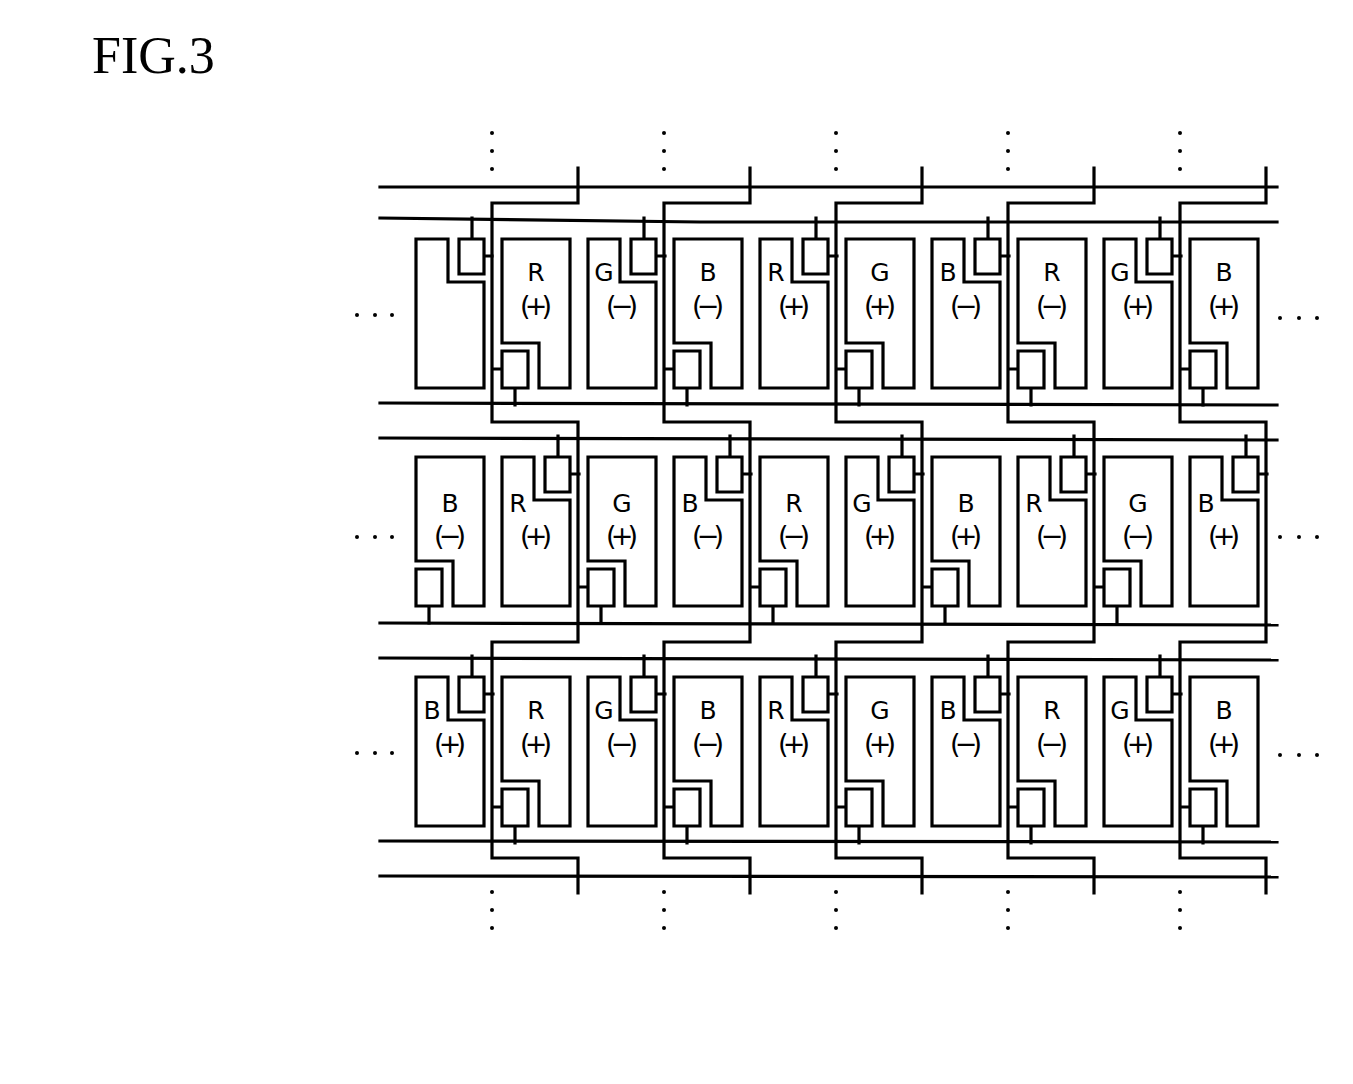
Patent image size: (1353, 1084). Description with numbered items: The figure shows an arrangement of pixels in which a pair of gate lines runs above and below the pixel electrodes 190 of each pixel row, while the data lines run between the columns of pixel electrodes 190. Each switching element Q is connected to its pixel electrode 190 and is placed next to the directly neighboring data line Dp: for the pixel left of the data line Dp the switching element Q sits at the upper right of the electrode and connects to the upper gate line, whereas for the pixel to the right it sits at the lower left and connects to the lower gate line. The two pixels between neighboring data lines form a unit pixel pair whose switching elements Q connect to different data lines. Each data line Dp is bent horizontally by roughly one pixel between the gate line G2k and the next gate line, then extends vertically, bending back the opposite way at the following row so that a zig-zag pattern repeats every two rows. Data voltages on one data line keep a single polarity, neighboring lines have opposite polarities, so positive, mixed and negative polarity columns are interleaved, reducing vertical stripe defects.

The pixel electrode 190 is at (416, 268).
The switching element Q is at (459, 248).
The gate line G2k is at (805, 189).
The data line Dp is at (543, 496).